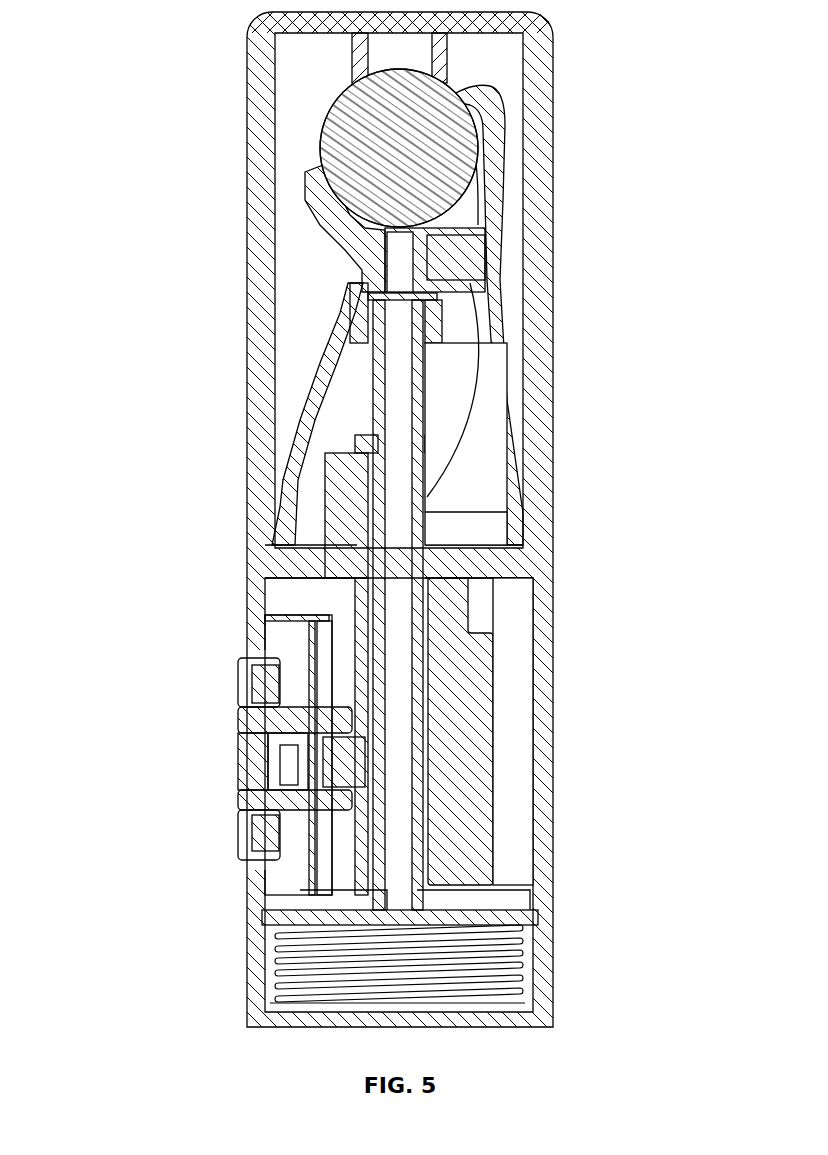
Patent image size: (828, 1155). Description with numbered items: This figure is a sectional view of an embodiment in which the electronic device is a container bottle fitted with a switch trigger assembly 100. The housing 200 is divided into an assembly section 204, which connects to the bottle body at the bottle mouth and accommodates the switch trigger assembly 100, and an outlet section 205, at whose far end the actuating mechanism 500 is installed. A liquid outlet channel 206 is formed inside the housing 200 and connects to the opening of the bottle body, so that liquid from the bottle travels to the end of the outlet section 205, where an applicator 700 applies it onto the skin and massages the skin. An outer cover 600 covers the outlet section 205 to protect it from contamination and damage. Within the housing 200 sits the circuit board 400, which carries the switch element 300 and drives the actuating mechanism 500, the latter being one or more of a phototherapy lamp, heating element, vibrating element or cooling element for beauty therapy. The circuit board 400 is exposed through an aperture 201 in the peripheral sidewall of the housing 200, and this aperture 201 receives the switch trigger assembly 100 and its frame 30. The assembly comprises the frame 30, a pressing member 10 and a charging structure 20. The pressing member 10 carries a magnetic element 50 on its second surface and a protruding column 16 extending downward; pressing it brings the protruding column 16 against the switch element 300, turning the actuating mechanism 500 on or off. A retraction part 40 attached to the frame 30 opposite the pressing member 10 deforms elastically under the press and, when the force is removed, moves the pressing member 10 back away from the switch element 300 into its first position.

The switch trigger assembly 100 is at (203, 755).
The pressing member 10 is at (238, 750).
The protruding column 16 is at (238, 772).
The charging structure 20 is at (238, 720).
The frame 30 is at (250, 875).
The retraction part 40 is at (238, 822).
The magnetic element 50 is at (238, 680).
The housing 200 is at (473, 519).
The aperture 201 is at (252, 655).
The assembly section 204 is at (454, 792).
The outlet section 205 is at (517, 476).
The liquid outlet channel 206 is at (397, 423).
The switch element 300 is at (340, 760).
The circuit board 400 is at (360, 823).
The actuating mechanism 500 is at (368, 278).
The outer cover 600 is at (533, 142).
The applicator 700 is at (332, 128).